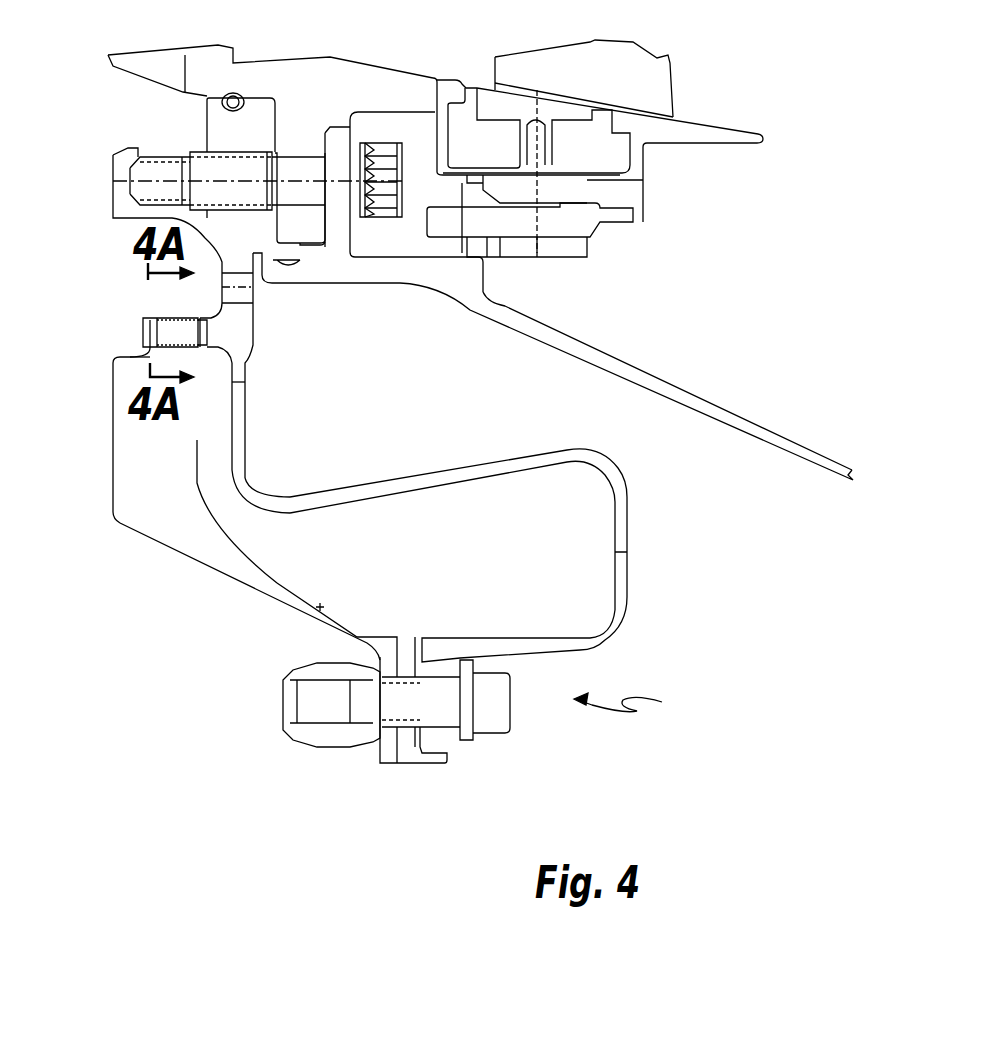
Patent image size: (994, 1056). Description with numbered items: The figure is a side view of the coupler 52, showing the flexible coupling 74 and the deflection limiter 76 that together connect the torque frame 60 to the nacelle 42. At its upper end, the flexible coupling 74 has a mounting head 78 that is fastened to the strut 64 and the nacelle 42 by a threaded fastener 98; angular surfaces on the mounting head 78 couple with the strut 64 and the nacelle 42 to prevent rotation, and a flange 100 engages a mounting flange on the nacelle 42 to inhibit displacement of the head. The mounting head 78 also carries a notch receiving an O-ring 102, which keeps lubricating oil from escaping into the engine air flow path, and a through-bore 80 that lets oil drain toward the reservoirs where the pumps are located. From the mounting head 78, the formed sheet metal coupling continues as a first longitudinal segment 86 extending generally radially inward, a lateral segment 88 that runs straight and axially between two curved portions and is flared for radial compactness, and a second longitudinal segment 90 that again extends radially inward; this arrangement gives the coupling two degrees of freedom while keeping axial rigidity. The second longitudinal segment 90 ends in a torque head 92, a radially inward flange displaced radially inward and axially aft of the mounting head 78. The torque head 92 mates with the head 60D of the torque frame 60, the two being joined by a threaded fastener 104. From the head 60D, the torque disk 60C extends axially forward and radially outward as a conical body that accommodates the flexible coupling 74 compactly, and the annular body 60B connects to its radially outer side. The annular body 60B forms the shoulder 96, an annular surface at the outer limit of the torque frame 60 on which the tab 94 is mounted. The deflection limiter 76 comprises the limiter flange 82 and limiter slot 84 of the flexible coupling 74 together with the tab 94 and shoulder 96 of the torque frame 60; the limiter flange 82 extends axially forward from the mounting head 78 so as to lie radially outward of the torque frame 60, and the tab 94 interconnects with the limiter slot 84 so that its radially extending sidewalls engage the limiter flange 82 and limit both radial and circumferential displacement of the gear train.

The nacelle 42 is at (335, 88).
The coupler 52 is at (632, 709).
The torque frame 60 is at (273, 459).
The annular body 60B is at (181, 489).
The torque disk 60C is at (268, 590).
The head 60D is at (397, 665).
The strut 64 is at (660, 383).
The flexible coupling 74 is at (470, 564).
The deflection limiter 76 is at (112, 297).
The mounting head 78 is at (243, 128).
The through-bore 80 is at (230, 302).
The limiter flange 82 is at (143, 330).
The limiter slot 84 is at (204, 320).
The first longitudinal segment 86 is at (237, 438).
The lateral segment 88 is at (413, 480).
The second longitudinal segment 90 is at (622, 553).
The torque head 92 is at (435, 652).
The tab 94 is at (178, 316).
The shoulder 96 is at (130, 358).
The threaded fastener 98 is at (190, 170).
The flange 100 is at (307, 248).
The O-ring 102 is at (230, 93).
The threaded fastener 104 is at (345, 707).